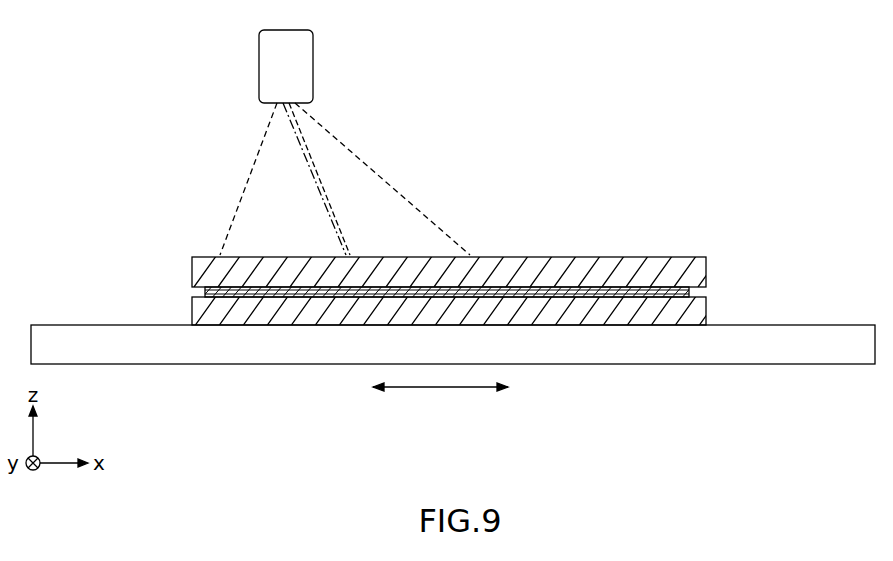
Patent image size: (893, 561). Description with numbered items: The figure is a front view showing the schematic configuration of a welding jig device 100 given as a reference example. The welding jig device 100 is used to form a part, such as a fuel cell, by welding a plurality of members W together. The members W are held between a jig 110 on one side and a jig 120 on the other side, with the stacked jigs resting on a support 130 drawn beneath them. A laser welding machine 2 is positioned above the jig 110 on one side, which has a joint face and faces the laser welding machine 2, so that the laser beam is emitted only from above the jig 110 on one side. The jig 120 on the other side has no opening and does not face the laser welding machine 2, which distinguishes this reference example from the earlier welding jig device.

The laser welding machine 2 is at (313, 53).
The welding jig device 100 is at (772, 231).
The jig on one side 110 is at (613, 267).
The jig on the other side 120 is at (607, 318).
The base / stage 130 is at (770, 342).
The members W is at (557, 299).